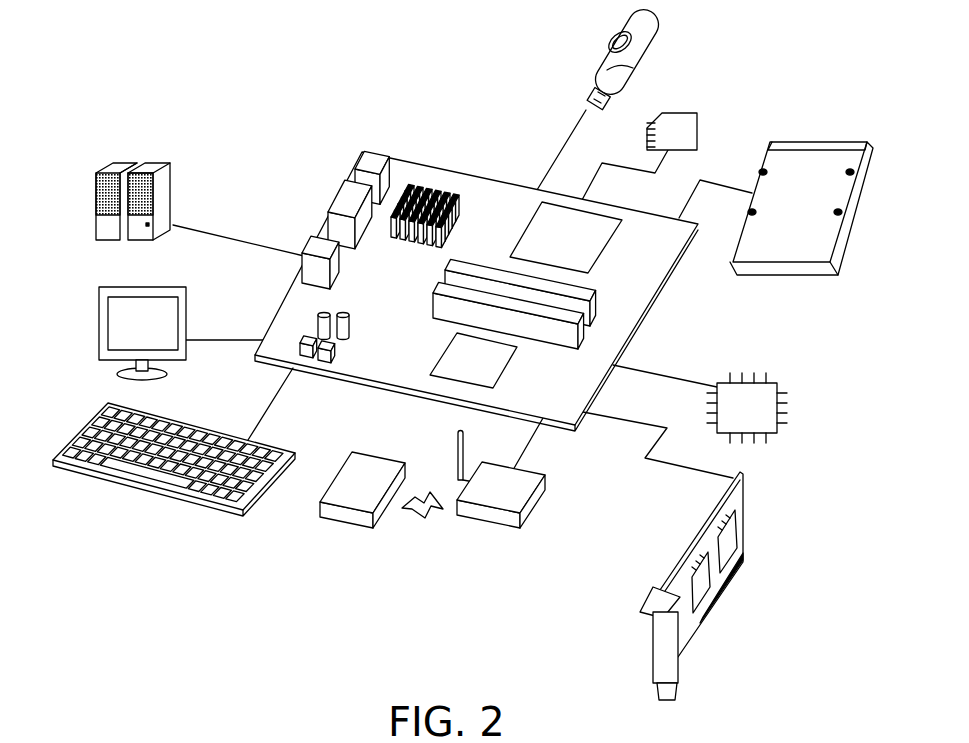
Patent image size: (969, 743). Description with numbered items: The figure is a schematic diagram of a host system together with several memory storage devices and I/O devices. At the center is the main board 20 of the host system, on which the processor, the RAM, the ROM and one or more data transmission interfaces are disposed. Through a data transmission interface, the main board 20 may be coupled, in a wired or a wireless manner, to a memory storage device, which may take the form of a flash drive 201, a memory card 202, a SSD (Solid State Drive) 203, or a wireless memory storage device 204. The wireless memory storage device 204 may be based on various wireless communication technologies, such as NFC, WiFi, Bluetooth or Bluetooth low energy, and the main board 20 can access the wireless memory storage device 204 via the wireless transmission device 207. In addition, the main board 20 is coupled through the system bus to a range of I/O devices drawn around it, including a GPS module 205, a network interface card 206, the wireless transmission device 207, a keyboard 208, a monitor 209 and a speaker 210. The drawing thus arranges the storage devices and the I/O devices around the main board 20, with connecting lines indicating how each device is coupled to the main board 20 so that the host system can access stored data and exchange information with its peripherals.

The main board 20 is at (478, 197).
The flash drive 201 is at (601, 53).
The memory card 202 is at (700, 124).
The SSD (Solid State Drive) 203 is at (820, 140).
The wireless memory storage device 204 is at (335, 465).
The GPS module 205 is at (788, 408).
The network interface card 206 is at (748, 530).
The wireless transmission device 207 is at (546, 505).
The keyboard 208 is at (178, 494).
The monitor 209 is at (97, 341).
The speaker 210 is at (96, 225).